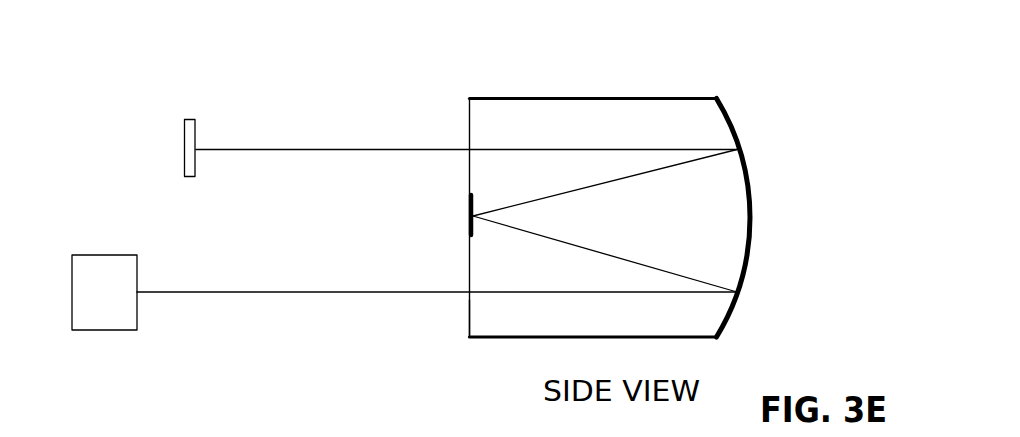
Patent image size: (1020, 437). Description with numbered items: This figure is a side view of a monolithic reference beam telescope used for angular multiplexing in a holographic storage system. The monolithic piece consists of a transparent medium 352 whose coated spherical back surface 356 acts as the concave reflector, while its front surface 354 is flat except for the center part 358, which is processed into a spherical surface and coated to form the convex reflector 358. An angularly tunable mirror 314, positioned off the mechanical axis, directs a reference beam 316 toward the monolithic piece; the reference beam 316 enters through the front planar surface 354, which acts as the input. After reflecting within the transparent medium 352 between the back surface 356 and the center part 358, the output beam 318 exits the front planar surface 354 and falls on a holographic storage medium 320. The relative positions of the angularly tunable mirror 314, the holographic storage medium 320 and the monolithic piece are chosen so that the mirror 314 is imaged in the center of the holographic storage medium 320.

The angularly tunable mirror 314 is at (185, 130).
The reference beam 316 is at (310, 150).
The output beam 318 is at (270, 293).
The holographic storage medium 320 is at (130, 254).
The transparent medium 352 is at (575, 97).
The front surface 354 is at (468, 313).
The coated spherical back surface 356 is at (753, 213).
The center part (convex reflector) 358 is at (470, 208).